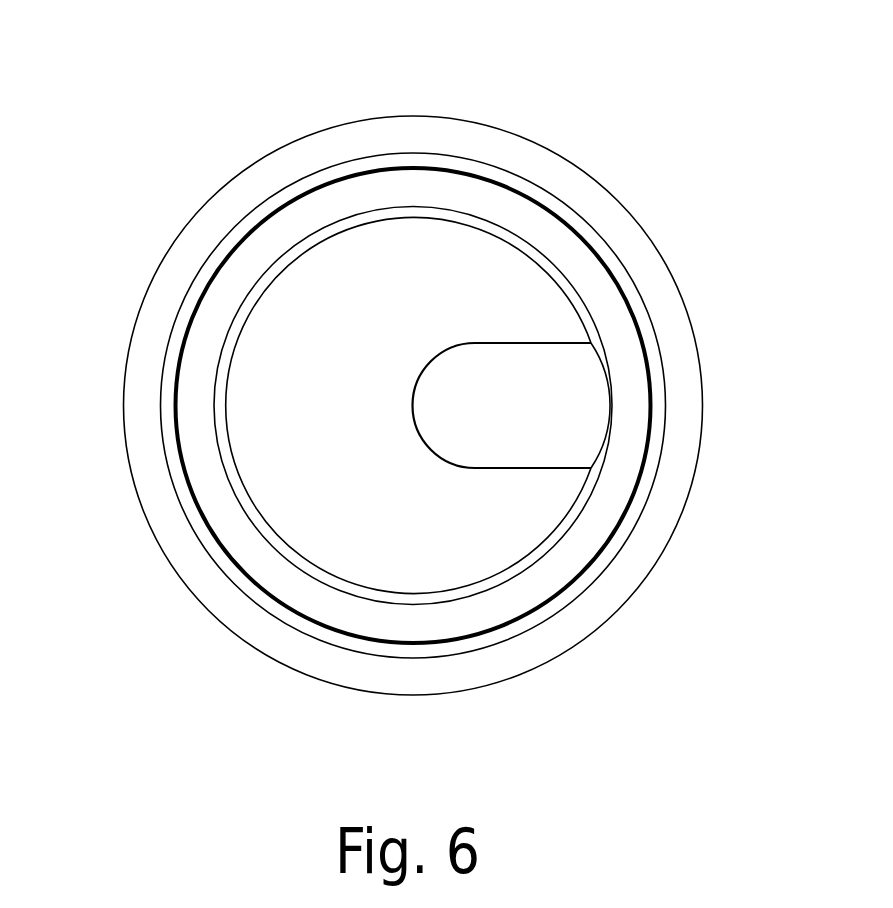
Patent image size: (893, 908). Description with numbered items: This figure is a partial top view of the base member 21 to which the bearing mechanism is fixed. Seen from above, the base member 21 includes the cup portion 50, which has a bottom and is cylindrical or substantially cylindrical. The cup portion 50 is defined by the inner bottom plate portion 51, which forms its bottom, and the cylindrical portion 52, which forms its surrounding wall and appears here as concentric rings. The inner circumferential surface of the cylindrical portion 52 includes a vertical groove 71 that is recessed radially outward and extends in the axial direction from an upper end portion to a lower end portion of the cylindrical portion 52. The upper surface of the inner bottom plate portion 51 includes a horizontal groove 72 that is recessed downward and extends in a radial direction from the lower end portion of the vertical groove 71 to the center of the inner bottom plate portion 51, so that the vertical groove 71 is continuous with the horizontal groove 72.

The base member 21 is at (142, 107).
The cup portion 50 is at (360, 165).
The inner bottom plate portion 51 is at (460, 535).
The cylindrical portion 52 is at (567, 255).
The vertical groove 71 is at (600, 405).
The horizontal groove 72 is at (478, 427).